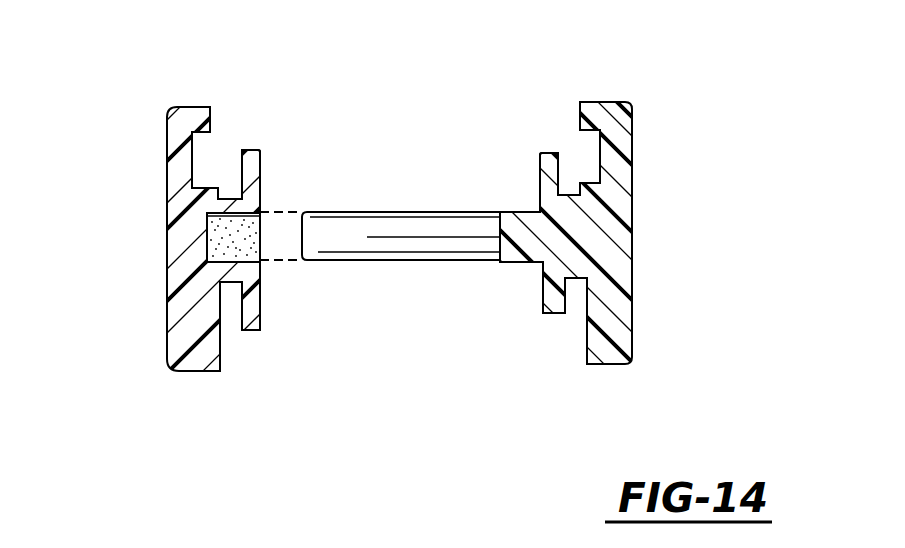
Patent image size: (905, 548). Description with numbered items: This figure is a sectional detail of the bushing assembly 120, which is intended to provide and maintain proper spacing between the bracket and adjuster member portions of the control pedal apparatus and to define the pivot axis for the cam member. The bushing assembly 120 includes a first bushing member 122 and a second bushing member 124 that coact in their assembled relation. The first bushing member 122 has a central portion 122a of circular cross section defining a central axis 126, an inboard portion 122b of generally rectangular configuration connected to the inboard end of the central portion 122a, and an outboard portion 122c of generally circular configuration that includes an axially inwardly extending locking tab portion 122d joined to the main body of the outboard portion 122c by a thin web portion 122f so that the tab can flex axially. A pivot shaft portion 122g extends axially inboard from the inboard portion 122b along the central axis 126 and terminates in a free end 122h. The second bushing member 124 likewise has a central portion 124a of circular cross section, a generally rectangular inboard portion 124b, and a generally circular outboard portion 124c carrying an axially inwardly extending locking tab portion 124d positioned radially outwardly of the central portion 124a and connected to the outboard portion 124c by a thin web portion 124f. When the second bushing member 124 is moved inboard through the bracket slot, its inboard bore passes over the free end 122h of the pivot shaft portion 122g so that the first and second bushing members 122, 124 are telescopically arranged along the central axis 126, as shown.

The bushing assembly 120 is at (466, 115).
The first bushing member 122 is at (581, 378).
The central portion 122a is at (580, 280).
The inboard portion 122b is at (548, 153).
The outboard portion 122c is at (605, 366).
The locking tab portion 122d is at (604, 102).
The thin web portion 122f is at (600, 160).
The pivot shaft portion 122g is at (430, 212).
The free end 122h is at (343, 253).
The second bushing member 124 is at (150, 303).
The central portion 124a is at (232, 198).
The inboard portion 124b is at (256, 150).
The outboard portion 124c is at (243, 237).
The locking tab portion 124d is at (189, 107).
The thin web portion 124f is at (167, 167).
The central axis 126 is at (513, 212).